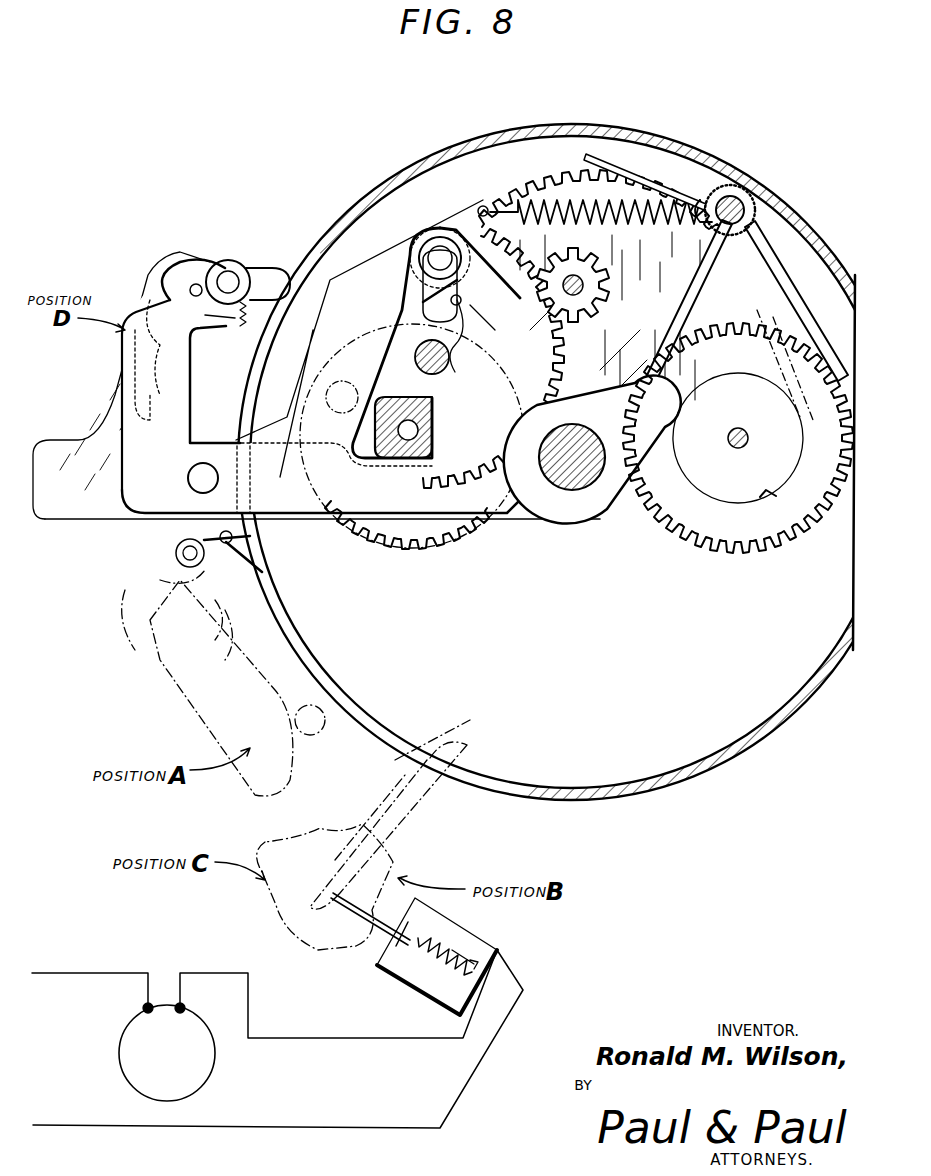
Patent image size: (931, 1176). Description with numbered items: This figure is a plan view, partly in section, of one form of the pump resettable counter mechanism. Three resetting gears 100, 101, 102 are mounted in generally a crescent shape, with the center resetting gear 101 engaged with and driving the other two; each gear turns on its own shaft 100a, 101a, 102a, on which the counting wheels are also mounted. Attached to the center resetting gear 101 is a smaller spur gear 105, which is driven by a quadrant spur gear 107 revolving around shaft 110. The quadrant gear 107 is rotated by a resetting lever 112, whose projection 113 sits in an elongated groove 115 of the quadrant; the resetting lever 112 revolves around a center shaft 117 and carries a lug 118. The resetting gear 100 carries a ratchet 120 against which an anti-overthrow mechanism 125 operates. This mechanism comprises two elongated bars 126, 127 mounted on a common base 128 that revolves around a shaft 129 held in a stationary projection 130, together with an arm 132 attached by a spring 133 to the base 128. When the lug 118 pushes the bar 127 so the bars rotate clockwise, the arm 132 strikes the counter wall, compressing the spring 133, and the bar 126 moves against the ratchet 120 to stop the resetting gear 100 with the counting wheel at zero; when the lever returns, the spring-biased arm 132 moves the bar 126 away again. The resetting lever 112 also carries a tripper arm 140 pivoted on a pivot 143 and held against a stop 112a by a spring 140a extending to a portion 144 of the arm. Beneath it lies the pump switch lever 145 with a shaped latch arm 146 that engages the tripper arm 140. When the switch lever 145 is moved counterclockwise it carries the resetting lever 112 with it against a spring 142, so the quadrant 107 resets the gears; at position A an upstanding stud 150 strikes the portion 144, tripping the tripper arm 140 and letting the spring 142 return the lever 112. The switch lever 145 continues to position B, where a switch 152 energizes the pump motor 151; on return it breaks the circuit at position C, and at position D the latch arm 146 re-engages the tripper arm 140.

The resetting gear 100 is at (745, 555).
The shaft 100a is at (738, 428).
The center resetting gear 101 is at (570, 180).
The shaft 101a is at (585, 285).
The resetting gear 102 is at (430, 568).
The shaft 102a is at (420, 428).
The spur gear 105 is at (595, 262).
The quadrant spur gear 107 is at (420, 485).
The shaft 110 is at (448, 360).
The resetting lever 112 is at (150, 483).
The stop 112a is at (197, 284).
The projection 113 is at (440, 258).
The elongated groove 115 is at (462, 300).
The center shaft 117 is at (578, 495).
The lug 118 is at (670, 405).
The ratchet 120 is at (738, 376).
The anti-overthrow mechanism 125 is at (745, 269).
The elongated bar 126 is at (815, 325).
The elongated bar 127 is at (696, 290).
The common base 128 is at (726, 196).
The shaft 129 is at (752, 200).
The stationary projection 130 is at (748, 195).
The arm 132 is at (655, 180).
The spring 133 is at (708, 200).
The tripper arm 140 is at (620, 128).
The spring 140a is at (233, 355).
The spring 142 is at (548, 225).
The pivot 143 is at (236, 270).
The portion of tripper arm 144 is at (272, 282).
The pump switch lever 145 is at (50, 445).
The latch arm 146 is at (183, 262).
The stud 150 is at (255, 540).
The pump motor 151 is at (120, 1053).
The switch 152 is at (410, 985).